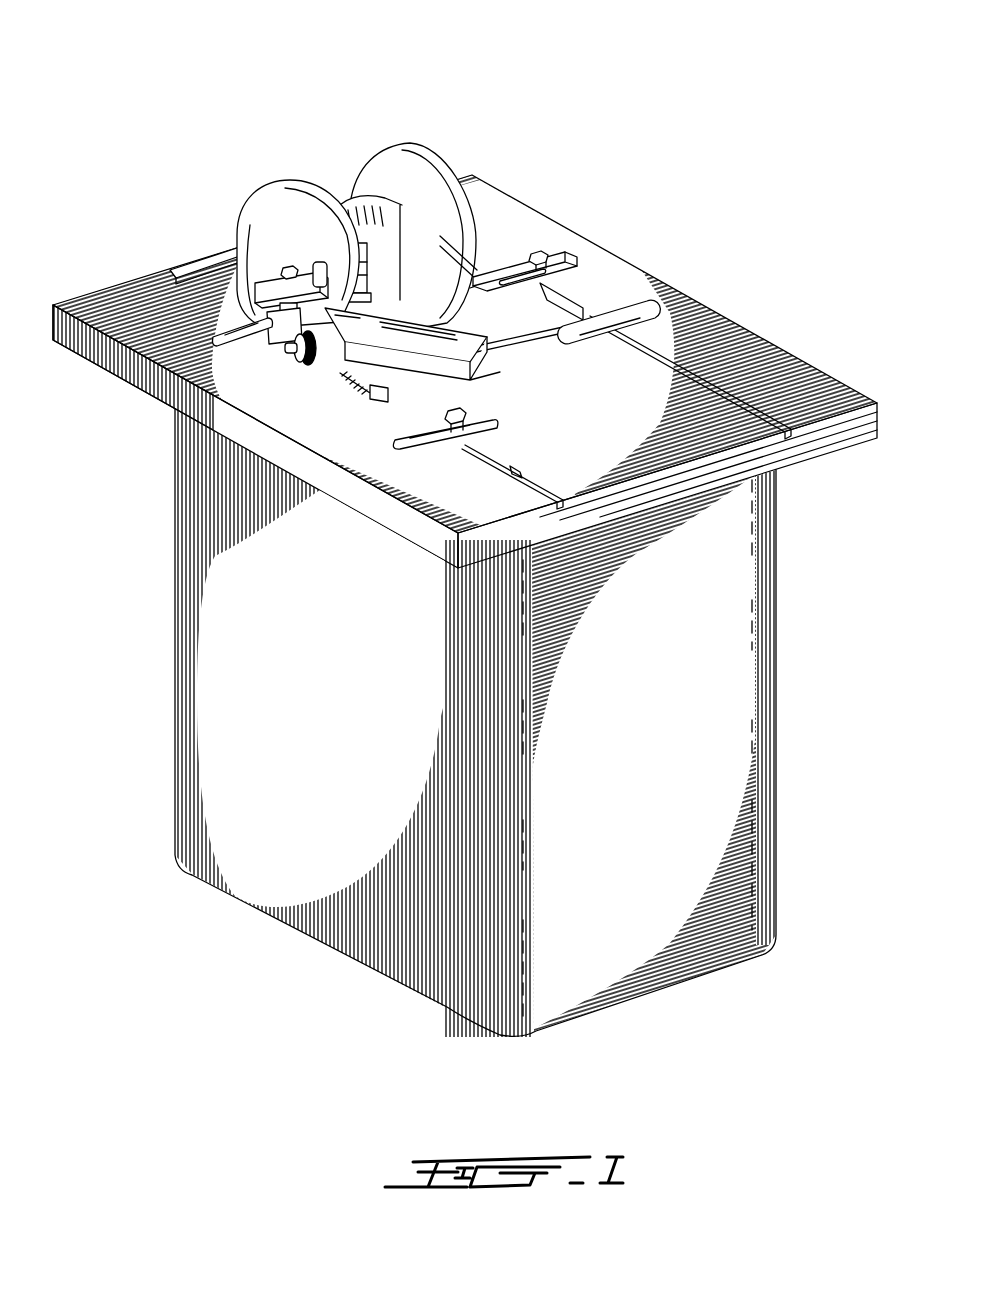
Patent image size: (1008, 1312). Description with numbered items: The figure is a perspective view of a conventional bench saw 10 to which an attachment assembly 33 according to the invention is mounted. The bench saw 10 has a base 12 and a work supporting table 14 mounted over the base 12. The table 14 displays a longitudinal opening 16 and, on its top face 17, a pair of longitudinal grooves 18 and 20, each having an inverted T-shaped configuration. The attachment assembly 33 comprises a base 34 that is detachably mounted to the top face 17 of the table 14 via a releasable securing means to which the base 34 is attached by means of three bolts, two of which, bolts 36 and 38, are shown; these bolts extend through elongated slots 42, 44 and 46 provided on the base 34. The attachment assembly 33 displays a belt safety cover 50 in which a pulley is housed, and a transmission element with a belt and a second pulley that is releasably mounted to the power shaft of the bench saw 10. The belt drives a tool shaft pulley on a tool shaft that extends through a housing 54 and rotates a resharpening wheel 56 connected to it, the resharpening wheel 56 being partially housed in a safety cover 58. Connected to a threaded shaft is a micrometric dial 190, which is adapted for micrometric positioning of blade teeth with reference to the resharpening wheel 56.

The bench saw 10 is at (450, 521).
The base 12 is at (777, 832).
The work supporting table 14 is at (450, 384).
The longitudinal opening 16 is at (487, 373).
The top face 17 is at (637, 397).
The longitudinal groove 18 is at (787, 437).
The longitudinal groove 20 is at (565, 512).
The attachment assembly 33 is at (356, 165).
The base 34 is at (250, 343).
The bolt 36 is at (563, 243).
The bolt 38 is at (447, 422).
The elongated slot 42 is at (563, 250).
The elongated slot 44 is at (412, 433).
The elongated slot 46 is at (240, 313).
The belt safety cover 50 is at (447, 213).
The housing 54 is at (375, 215).
The resharpening wheel 56 is at (318, 265).
The safety cover 58 is at (270, 218).
The micrometric dial 190 is at (300, 362).